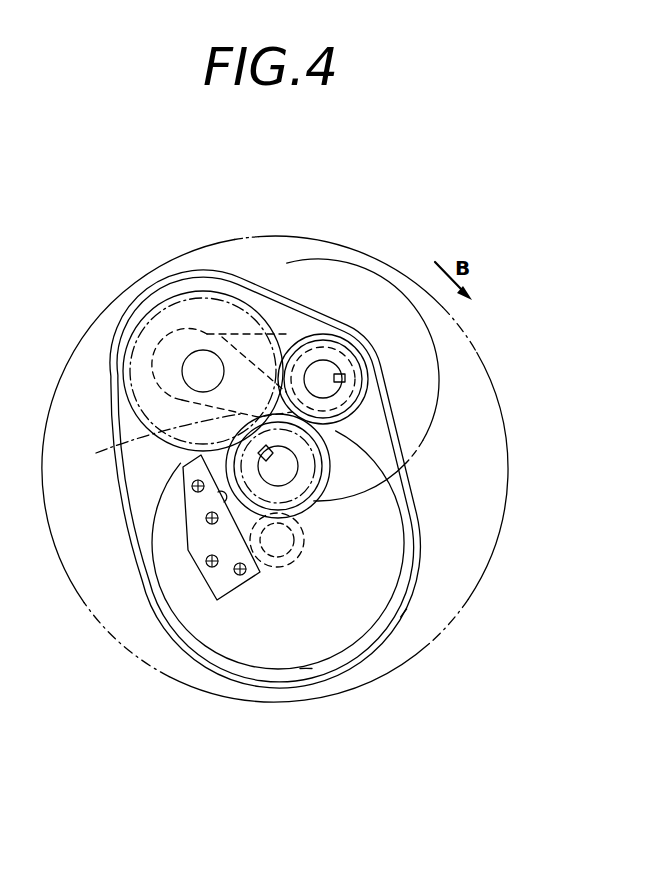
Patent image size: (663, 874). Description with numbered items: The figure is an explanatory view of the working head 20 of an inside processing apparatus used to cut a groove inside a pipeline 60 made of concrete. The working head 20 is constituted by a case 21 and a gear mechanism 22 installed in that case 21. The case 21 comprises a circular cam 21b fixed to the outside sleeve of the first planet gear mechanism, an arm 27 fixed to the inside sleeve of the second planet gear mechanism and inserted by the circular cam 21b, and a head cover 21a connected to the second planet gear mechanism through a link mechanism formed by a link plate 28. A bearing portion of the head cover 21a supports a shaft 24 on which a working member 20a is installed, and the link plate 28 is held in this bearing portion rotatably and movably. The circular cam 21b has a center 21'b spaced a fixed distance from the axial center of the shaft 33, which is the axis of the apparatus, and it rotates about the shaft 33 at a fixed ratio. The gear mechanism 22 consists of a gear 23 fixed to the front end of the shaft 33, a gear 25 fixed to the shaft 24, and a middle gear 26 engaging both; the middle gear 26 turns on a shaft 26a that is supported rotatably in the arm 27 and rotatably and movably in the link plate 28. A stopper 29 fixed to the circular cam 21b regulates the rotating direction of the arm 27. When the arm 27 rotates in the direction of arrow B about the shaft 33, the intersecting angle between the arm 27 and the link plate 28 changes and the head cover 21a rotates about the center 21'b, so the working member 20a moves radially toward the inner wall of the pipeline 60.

The working head 20 is at (432, 566).
The working member 20a is at (368, 272).
The case 21 is at (282, 585).
The head cover 21a is at (400, 617).
The circular cam 21b is at (305, 647).
The center of the circular cam 21'b is at (311, 540).
The gear mechanism 22 is at (140, 363).
The gear 23 is at (237, 468).
The shaft 24 is at (335, 388).
The gear 25 is at (337, 353).
The middle gear 26 is at (180, 310).
The shaft 26a is at (193, 362).
The arm 27 is at (200, 420).
The link plate 28 is at (290, 337).
The stopper 29 is at (220, 580).
The shaft 33 is at (288, 468).
The pipeline 60 is at (501, 412).